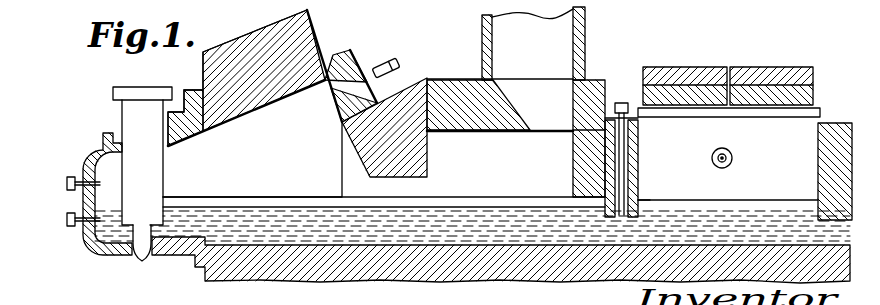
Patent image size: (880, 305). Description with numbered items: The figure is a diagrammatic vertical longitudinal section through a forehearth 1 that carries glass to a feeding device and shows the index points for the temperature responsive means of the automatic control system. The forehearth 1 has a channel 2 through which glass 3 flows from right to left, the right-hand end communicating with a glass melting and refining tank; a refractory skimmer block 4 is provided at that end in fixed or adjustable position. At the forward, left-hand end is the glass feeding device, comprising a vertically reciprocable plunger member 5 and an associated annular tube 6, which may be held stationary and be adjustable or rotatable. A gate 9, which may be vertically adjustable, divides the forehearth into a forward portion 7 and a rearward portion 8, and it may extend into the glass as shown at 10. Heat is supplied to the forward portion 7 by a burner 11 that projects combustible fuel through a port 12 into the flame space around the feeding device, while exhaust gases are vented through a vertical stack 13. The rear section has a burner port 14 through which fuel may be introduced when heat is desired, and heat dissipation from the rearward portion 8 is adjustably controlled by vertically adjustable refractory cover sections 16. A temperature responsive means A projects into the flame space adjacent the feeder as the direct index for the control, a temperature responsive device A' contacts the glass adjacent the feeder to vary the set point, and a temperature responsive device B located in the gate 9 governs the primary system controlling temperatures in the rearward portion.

The forehearth 1 is at (386, 291).
The channel 2 is at (466, 204).
The glass 3 is at (428, 223).
The skimmer block 4 is at (833, 123).
The plunger member 5 is at (143, 261).
The annular tube 6 is at (157, 181).
The forward portion 7 is at (252, 103).
The rearward portion 8 is at (729, 154).
The gate 9 is at (638, 156).
The gate extension into the glass 10 is at (641, 212).
The burner 11 is at (380, 60).
The port 12 is at (325, 88).
The vertical stack 13 is at (533, 43).
The burner port 14 is at (722, 152).
The cover sections 16 is at (752, 78).
The temperature responsive means A is at (82, 169).
The temperature responsive device A' is at (80, 243).
The temperature responsive device B is at (622, 103).